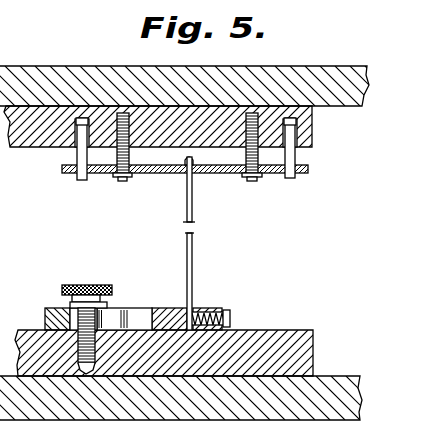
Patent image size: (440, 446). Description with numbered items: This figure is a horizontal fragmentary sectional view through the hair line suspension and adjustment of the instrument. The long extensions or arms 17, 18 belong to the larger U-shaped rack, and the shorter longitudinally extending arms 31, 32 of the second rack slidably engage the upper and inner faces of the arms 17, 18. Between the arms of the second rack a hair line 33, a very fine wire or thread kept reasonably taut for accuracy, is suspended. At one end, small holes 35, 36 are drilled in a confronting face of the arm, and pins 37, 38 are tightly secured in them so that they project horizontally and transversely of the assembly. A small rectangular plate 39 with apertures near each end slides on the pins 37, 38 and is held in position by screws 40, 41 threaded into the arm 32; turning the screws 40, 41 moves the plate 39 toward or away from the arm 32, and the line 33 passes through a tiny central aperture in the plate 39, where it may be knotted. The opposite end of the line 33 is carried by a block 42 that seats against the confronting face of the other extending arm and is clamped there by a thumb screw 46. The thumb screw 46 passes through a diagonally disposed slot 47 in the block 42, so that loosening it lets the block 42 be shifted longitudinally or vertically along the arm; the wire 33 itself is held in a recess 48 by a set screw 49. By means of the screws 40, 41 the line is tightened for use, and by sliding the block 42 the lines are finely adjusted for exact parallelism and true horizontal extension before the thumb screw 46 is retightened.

The extension arm 17 is at (47, 88).
The extension arm 18 is at (333, 378).
The longitudinally extending arm 31 is at (298, 334).
The longitudinally extending arm 32 is at (15, 119).
The hair line 33 is at (192, 200).
The small hole 35 is at (72, 118).
The small hole 36 is at (302, 106).
The pin 37 is at (81, 181).
The pin 38 is at (288, 181).
The plate 39 is at (163, 174).
The screw 40 is at (124, 181).
The screw 41 is at (254, 181).
The block 42 is at (162, 312).
The thumb screw 46 is at (77, 286).
The diagonally disposed slot 47 is at (125, 312).
The recess 48 is at (193, 309).
The set screw 49 is at (228, 317).